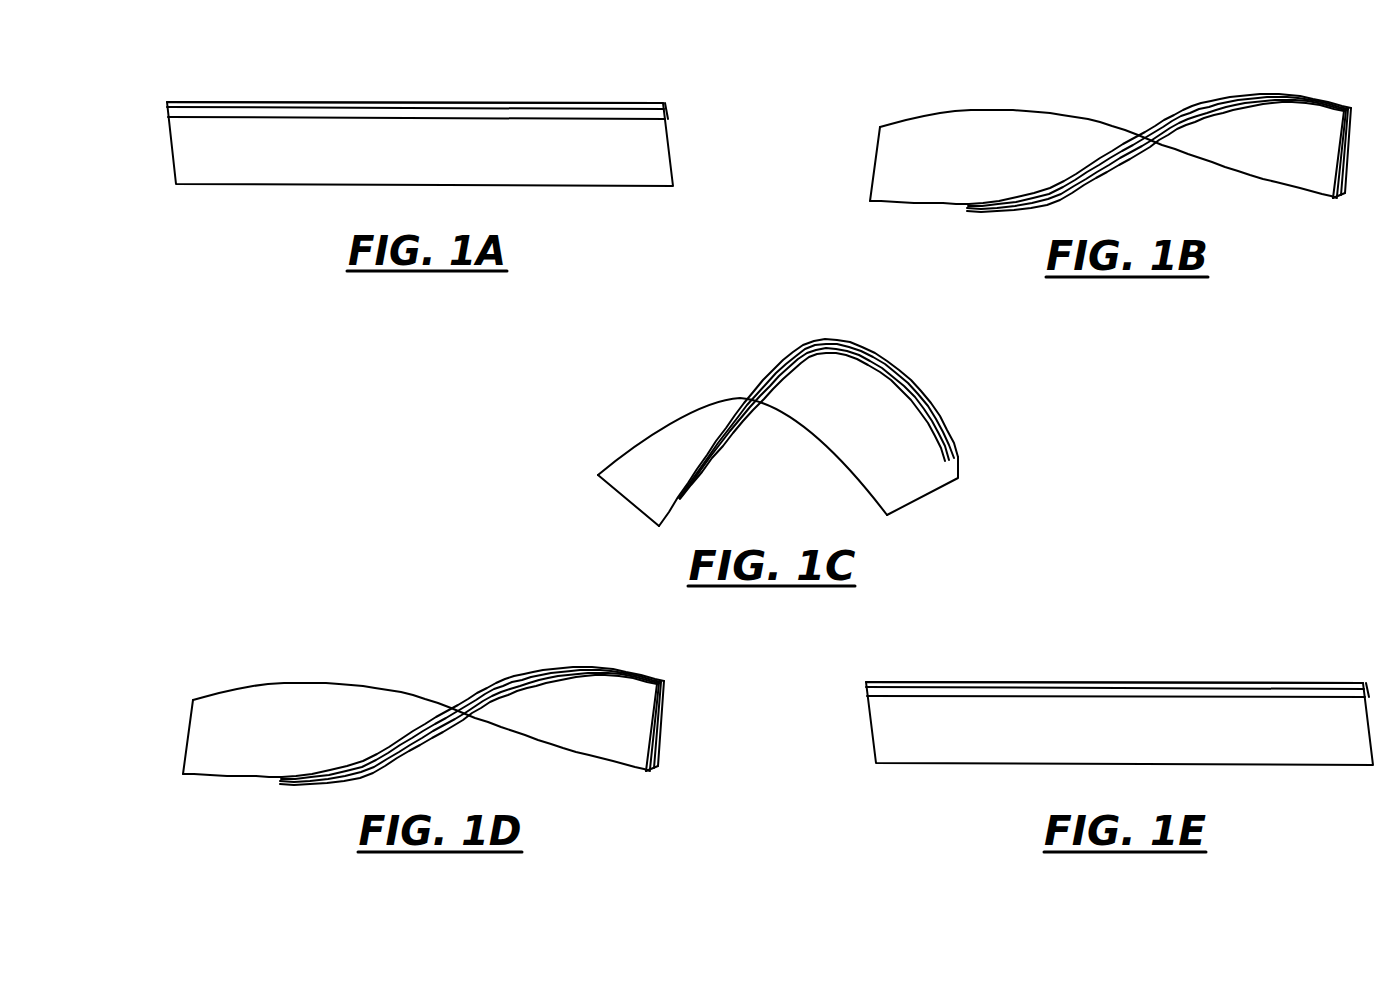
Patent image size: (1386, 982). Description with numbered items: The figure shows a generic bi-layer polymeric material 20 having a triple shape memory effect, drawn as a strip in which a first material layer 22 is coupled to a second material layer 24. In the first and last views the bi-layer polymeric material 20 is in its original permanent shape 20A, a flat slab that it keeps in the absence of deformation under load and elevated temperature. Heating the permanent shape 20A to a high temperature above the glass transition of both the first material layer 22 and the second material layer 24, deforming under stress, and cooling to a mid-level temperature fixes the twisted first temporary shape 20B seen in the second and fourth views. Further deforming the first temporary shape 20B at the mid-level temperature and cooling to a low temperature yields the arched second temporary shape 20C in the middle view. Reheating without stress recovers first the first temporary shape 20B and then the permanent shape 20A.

In FIG. 1A, the bi-layer polymeric material 20 is at (395, 110).
In FIG. 1B, the bi-layer polymeric material 20 is at (1110, 145).
In FIG. 1C, the bi-layer polymeric material 20 is at (789, 414).
In FIG. 1D, the bi-layer polymeric material 20 is at (423, 690).
In FIG. 1E, the bi-layer polymeric material 20 is at (1119, 662).
In FIG. 1A, the permanent shape 20A is at (395, 110).
In FIG. 1E, the permanent shape 20A is at (1119, 662).
In FIG. 1B, the first temporary shape 20B is at (1110, 142).
In FIG. 1D, the first temporary shape 20B is at (423, 690).
In FIG. 1C, the second temporary shape 20C is at (789, 390).
In FIG. 1A, the first material layer 22 is at (234, 106).
In FIG. 1B, the first material layer 22 is at (1284, 170).
In FIG. 1C, the first material layer 22 is at (638, 457).
In FIG. 1D, the first material layer 22 is at (283, 708).
In FIG. 1E, the first material layer 22 is at (992, 682).
In FIG. 1A, the second material layer 24 is at (210, 157).
In FIG. 1B, the second material layer 24 is at (928, 138).
In FIG. 1C, the second material layer 24 is at (910, 430).
In FIG. 1D, the second material layer 24 is at (588, 742).
In FIG. 1E, the second material layer 24 is at (1133, 717).